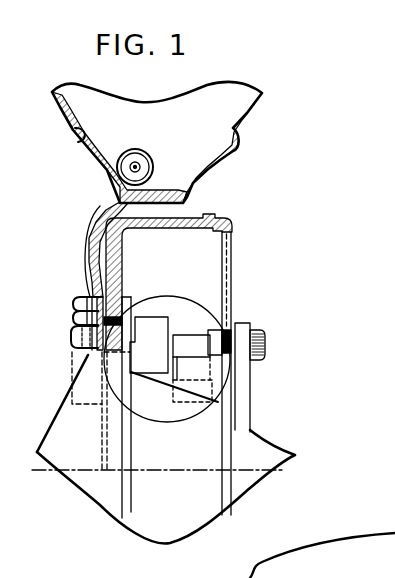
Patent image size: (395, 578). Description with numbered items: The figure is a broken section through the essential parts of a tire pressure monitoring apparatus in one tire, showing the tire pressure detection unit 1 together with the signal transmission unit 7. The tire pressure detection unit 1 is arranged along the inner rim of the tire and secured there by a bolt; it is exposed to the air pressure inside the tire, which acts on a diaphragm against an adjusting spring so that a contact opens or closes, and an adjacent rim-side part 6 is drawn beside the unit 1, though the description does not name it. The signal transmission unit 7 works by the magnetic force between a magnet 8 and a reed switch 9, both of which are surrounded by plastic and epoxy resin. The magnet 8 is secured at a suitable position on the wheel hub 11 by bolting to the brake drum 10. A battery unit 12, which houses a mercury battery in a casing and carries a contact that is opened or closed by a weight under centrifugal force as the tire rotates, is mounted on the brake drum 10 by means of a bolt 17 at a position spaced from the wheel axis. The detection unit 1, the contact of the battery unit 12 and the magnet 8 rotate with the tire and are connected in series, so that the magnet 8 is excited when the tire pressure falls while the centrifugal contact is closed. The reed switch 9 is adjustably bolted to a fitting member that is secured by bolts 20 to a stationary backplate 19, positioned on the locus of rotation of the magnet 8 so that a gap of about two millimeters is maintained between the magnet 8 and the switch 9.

The tire pressure detection unit 1 is at (153, 158).
The hood channel member 6 is at (93, 160).
The signal transmission unit 7 is at (167, 295).
The magnet 8 is at (142, 373).
The reed switch 9 is at (193, 338).
The brake drum 10 is at (177, 231).
The wheel hub 11 is at (143, 518).
The battery unit 12 is at (73, 352).
The bolt 17 is at (87, 295).
The backplate 19 is at (217, 258).
The bolts 20 is at (266, 350).